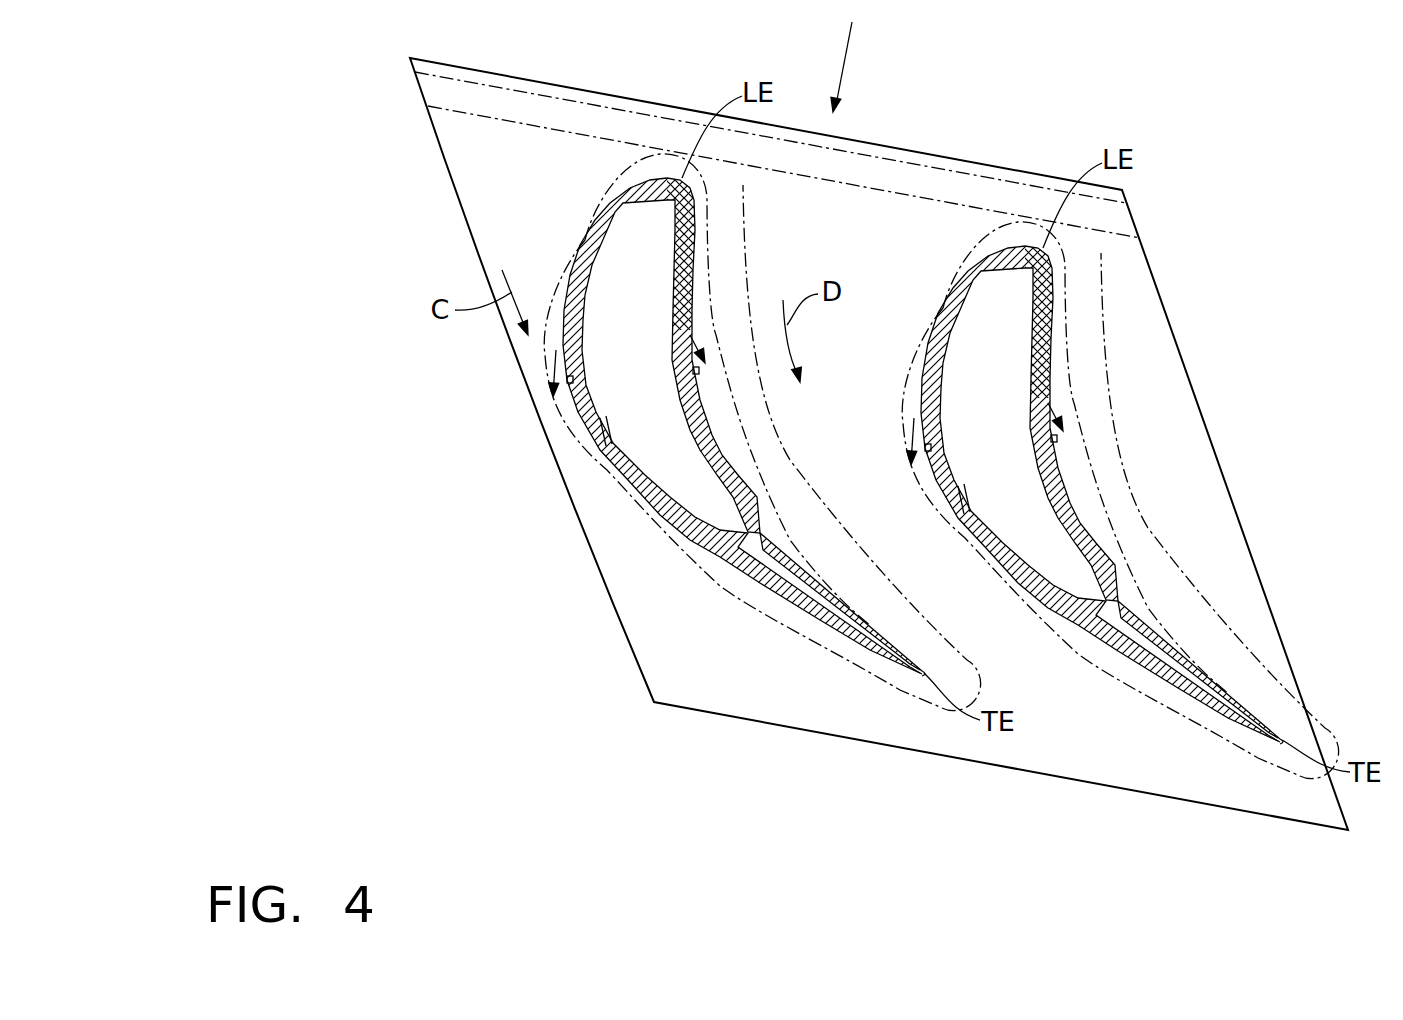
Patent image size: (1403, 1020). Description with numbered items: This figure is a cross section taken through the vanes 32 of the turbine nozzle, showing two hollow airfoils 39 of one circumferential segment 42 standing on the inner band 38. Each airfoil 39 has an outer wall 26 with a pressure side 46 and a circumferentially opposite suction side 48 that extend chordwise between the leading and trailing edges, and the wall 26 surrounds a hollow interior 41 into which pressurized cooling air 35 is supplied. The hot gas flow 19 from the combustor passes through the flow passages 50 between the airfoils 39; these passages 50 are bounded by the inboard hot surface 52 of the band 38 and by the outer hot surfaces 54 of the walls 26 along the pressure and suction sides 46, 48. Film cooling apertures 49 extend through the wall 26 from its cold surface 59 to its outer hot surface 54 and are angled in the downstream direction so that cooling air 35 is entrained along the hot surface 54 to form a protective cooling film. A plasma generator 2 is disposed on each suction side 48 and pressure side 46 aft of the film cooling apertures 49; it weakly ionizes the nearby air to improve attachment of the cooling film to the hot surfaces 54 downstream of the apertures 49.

The hot gas flow 19 is at (850, 55).
The circumferential segment 42 is at (902, 148).
The inboard hot surface 52 is at (548, 150).
The outer wall 26 is at (810, 615).
The airfoil 39 is at (693, 553).
The hollow interior 41 is at (697, 198).
The suction side 48 is at (592, 262).
The cooling air 35 is at (588, 305).
The pressure side 46 is at (700, 290).
The plasma generator 2 is at (567, 385).
The cold surface 59 is at (668, 340).
The outer hot surface 54 is at (712, 408).
The flow passage 50 is at (884, 409).
The film cooling aperture 49 is at (607, 457).
The vane 32 is at (752, 515).
The inner band 38 is at (1182, 405).